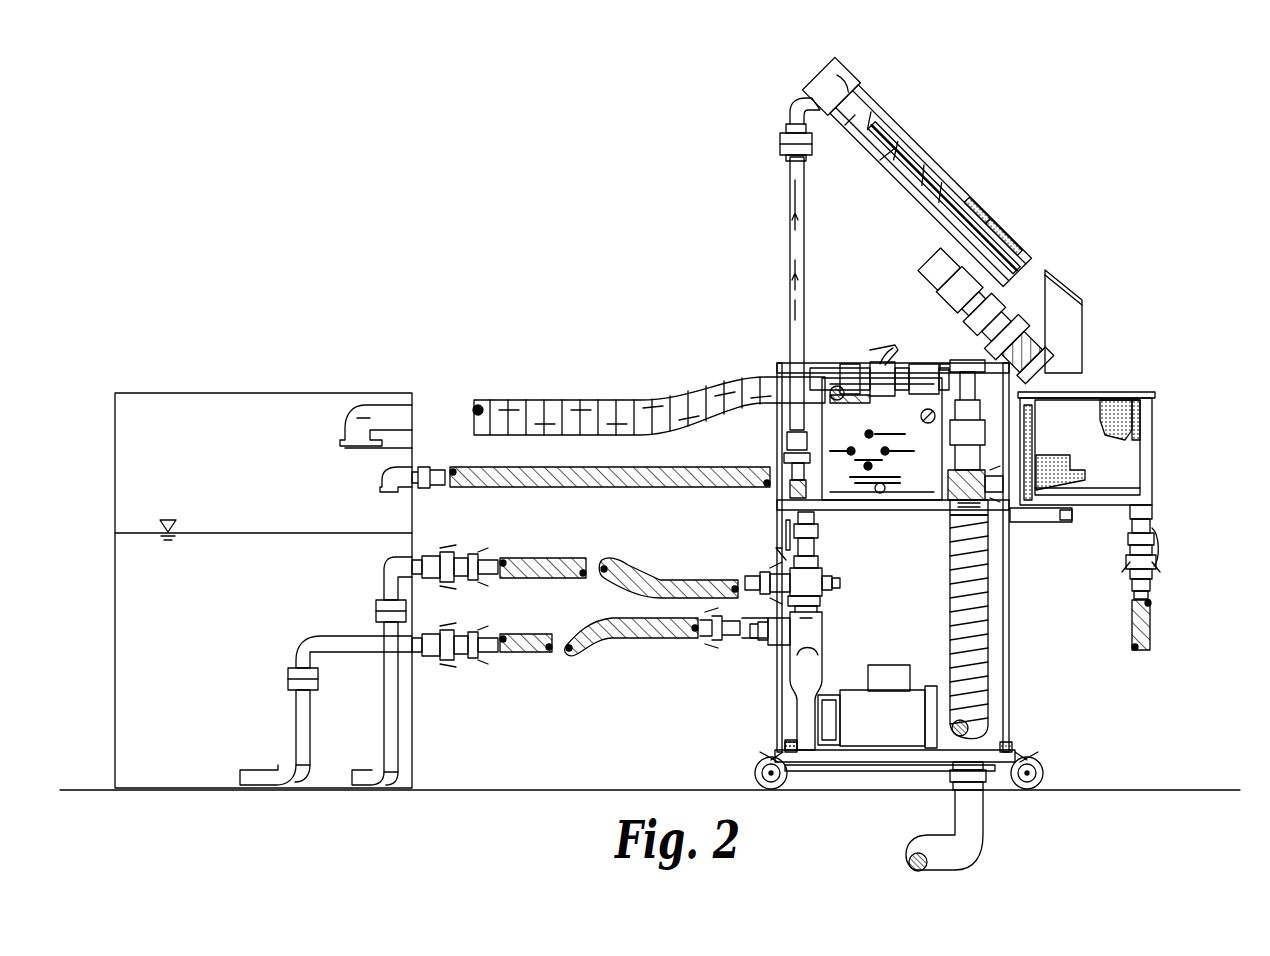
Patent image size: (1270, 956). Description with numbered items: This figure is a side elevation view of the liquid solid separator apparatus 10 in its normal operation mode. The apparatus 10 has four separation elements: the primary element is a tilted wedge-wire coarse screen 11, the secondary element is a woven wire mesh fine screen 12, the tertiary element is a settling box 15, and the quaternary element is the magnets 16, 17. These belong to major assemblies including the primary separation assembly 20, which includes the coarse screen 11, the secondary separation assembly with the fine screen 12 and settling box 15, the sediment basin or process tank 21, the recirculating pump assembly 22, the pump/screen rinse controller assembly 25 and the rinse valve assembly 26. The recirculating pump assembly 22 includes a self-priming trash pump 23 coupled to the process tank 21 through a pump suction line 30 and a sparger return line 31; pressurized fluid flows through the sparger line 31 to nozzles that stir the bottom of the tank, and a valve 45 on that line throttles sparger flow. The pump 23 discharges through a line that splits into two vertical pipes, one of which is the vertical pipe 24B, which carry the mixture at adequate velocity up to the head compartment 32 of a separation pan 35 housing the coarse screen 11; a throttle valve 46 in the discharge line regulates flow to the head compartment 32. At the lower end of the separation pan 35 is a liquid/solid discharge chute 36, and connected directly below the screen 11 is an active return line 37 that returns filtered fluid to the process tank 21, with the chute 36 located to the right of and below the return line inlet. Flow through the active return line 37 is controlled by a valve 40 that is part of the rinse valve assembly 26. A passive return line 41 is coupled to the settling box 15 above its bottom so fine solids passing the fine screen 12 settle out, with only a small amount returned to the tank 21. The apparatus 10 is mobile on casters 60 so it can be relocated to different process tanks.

The apparatus 10 is at (500, 258).
The wedge-wire coarse screen 11 is at (930, 165).
The woven wire mesh fine screen 12 is at (1160, 455).
The settling box 15 is at (1176, 395).
The magnet 16 is at (1000, 250).
The magnet 17 is at (1035, 528).
The primary separation assembly 20 is at (940, 144).
The process tank 21 is at (232, 352).
The recirculating pump assembly 22 is at (760, 703).
The self-priming trash pump 23 is at (808, 650).
The vertical pipe 24B is at (788, 212).
The pump/screen rinse controller assembly 25 is at (865, 392).
The rinse valve assembly 26 is at (971, 352).
The pump suction line 30 is at (624, 645).
The sparger return line 31 is at (622, 568).
The head compartment 32 is at (846, 66).
The separation pan 35 is at (852, 160).
The liquid/solid discharge chute 36 is at (1084, 302).
The active return line 37 is at (608, 404).
The valve 40 is at (990, 325).
The passive return line 41 is at (556, 486).
The valve 45 is at (448, 576).
The throttle valve 46 is at (818, 548).
The casters 60 is at (755, 780).